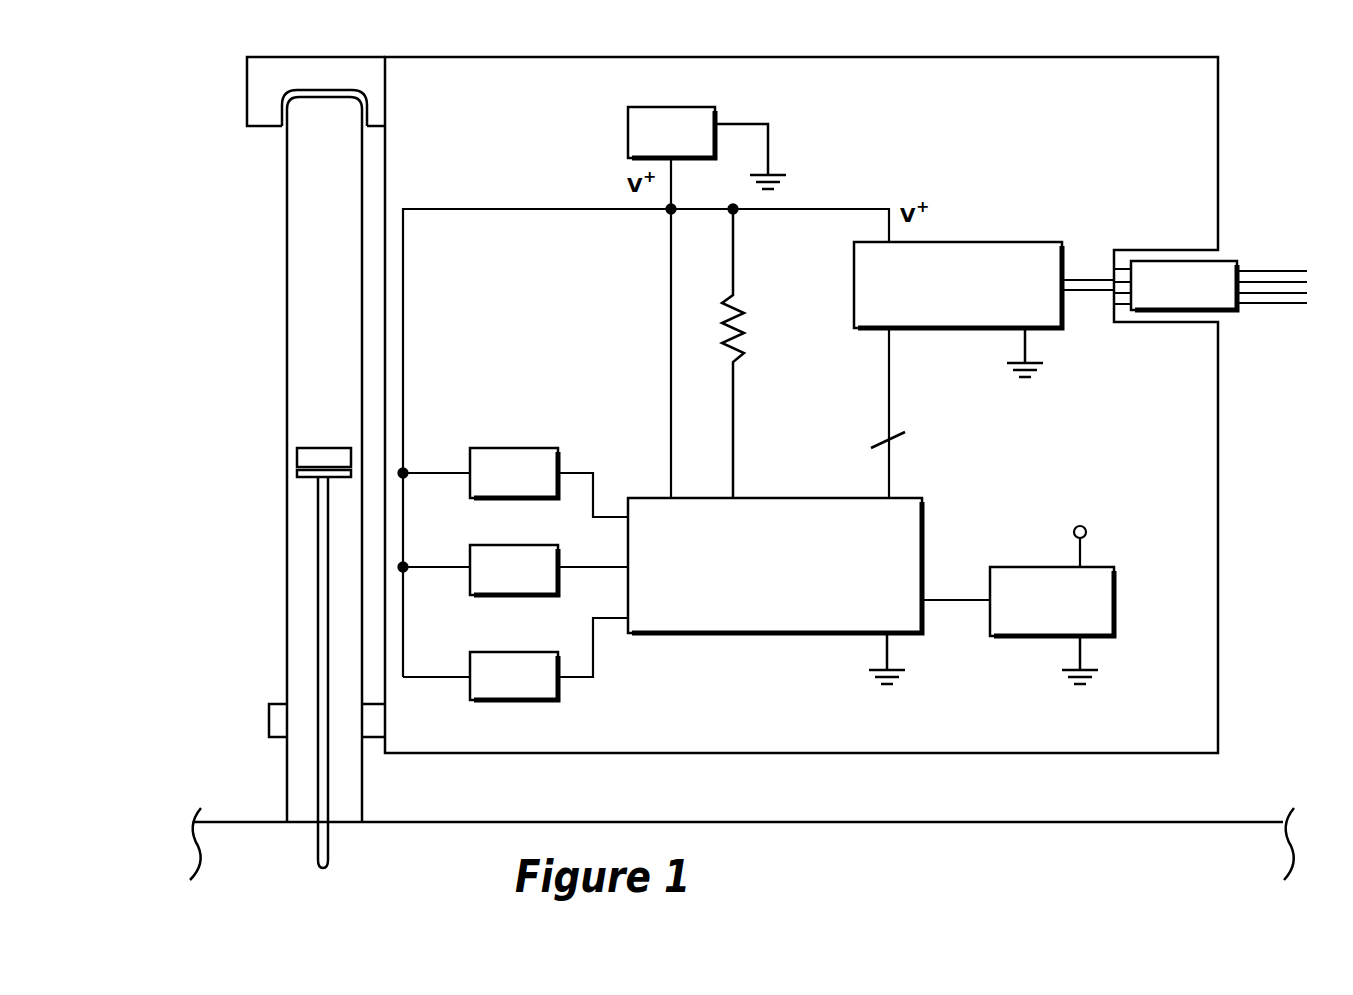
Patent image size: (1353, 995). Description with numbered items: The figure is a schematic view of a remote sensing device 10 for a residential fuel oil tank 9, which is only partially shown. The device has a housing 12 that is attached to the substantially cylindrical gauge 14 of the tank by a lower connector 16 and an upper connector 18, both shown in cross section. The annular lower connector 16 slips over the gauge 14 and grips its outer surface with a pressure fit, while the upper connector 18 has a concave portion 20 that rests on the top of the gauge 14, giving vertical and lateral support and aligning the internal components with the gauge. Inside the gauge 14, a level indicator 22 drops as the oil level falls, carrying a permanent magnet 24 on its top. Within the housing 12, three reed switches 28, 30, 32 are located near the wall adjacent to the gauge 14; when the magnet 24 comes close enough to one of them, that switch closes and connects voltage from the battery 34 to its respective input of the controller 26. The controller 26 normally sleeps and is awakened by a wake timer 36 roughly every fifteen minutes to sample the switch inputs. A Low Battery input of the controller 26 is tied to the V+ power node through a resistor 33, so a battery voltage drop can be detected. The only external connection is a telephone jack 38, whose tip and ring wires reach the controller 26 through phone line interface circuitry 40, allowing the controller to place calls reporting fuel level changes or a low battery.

The residential fuel oil tank 9 is at (900, 861).
The remote sensing device 10 is at (1255, 518).
The housing 12 is at (732, 753).
The gauge 14 is at (286, 538).
The lower connector 16 is at (268, 725).
The upper connector 18 is at (266, 92).
The concave portion 20 is at (317, 90).
The level indicator 22 is at (318, 620).
The permanent magnet 24 is at (310, 460).
The controller 26 is at (925, 535).
The reed switch 28 is at (488, 447).
The reed switch 30 is at (487, 545).
The reed switch 32 is at (487, 652).
The resistor 33 is at (743, 322).
The battery 34 is at (660, 107).
The wake timer 36 is at (1118, 598).
The telephone jack 38 is at (1219, 276).
The phone line interface circuitry 40 is at (975, 242).